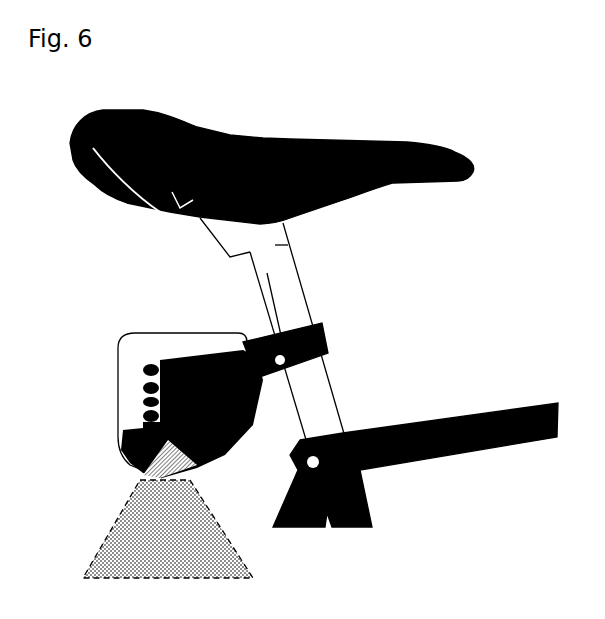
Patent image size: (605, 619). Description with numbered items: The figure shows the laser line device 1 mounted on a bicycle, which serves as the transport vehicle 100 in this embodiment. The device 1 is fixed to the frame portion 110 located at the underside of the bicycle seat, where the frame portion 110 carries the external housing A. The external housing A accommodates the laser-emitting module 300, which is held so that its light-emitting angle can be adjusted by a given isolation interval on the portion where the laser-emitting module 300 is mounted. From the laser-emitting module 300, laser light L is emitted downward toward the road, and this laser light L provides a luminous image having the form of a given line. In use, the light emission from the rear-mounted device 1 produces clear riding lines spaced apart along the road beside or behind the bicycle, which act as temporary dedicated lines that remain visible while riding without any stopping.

The transport vehicle 100 is at (302, 137).
The frame portion 110 is at (302, 300).
The device 1 is at (193, 376).
The external housing A is at (162, 337).
The laser-emitting module 300 is at (118, 440).
The laser light L is at (107, 560).